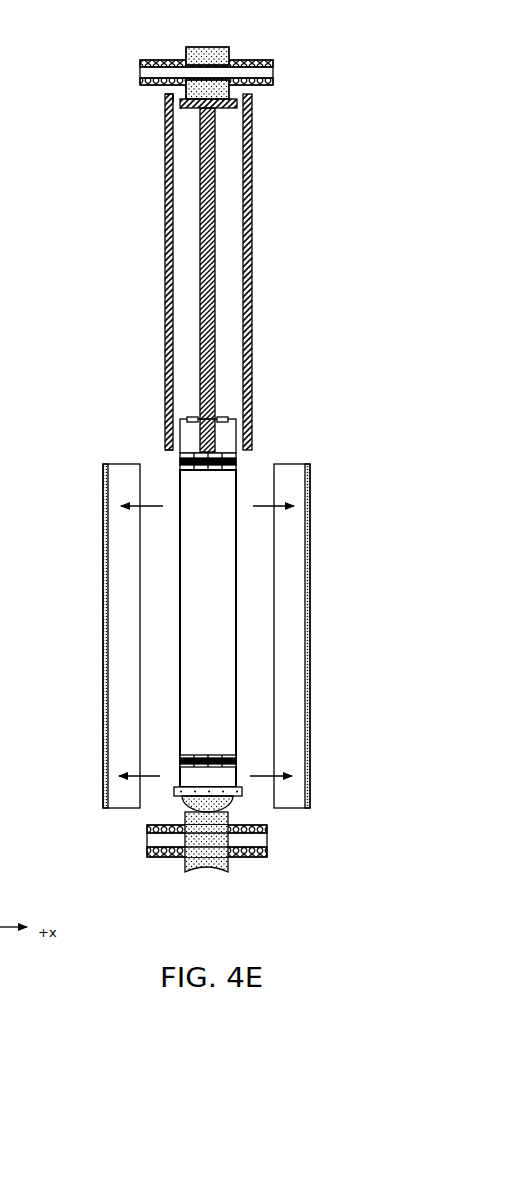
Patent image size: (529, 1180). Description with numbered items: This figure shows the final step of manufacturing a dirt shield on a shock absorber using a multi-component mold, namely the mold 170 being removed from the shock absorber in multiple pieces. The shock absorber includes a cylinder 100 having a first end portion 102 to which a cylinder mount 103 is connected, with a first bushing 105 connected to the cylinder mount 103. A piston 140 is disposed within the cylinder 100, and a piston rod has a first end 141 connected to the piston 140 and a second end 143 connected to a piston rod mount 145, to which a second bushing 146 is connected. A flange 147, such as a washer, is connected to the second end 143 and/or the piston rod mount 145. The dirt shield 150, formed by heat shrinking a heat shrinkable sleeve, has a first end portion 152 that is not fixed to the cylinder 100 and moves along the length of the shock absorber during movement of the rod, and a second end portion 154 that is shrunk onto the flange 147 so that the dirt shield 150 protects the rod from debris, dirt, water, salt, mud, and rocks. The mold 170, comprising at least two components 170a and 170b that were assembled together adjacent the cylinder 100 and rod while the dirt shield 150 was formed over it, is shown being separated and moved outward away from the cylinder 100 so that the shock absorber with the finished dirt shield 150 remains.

The cylinder 100 is at (238, 712).
The first end portion 102 is at (235, 778).
The cylinder mount 103 is at (229, 865).
The first bushing 105 is at (229, 828).
The piston 140 is at (195, 467).
The first end 141 is at (216, 438).
The second end 143 is at (216, 113).
The piston rod mount 145 is at (220, 46).
The second bushing 146 is at (263, 61).
The flange 147 is at (182, 108).
The dirt shield 150 is at (251, 267).
The first end portion 152 is at (167, 442).
The second end portion 154 is at (163, 102).
The mold 170 is at (207, 636).
The mold component 170a is at (105, 560).
The mold component 170b is at (309, 598).